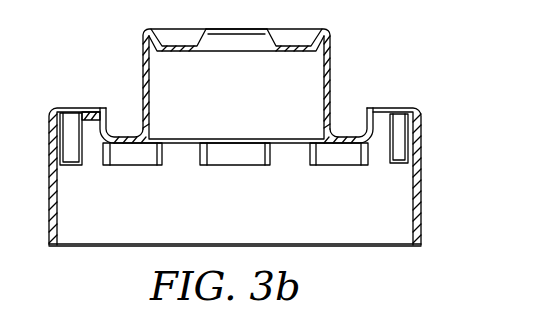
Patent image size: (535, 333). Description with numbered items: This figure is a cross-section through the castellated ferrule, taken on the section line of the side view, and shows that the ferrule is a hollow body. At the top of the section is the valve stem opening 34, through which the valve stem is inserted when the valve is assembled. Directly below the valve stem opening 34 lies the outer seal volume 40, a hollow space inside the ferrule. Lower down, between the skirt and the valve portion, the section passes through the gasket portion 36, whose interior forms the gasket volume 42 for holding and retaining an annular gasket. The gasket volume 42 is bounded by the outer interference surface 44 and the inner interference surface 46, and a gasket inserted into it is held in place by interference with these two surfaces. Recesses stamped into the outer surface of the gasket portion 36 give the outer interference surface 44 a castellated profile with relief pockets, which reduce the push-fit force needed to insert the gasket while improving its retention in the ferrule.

The valve stem opening 34 is at (238, 29).
The gasket portion 36 is at (423, 139).
The outer seal volume 40 is at (313, 60).
The gasket volume 42 is at (383, 120).
The outer interference surface 44 is at (62, 147).
The inner interference surface 46 is at (78, 118).